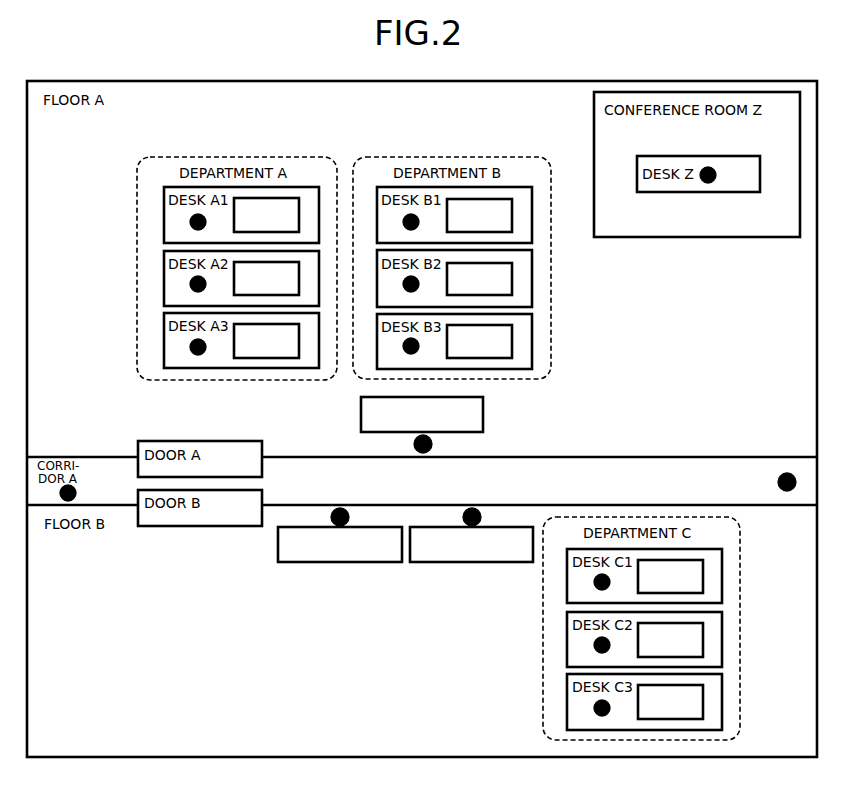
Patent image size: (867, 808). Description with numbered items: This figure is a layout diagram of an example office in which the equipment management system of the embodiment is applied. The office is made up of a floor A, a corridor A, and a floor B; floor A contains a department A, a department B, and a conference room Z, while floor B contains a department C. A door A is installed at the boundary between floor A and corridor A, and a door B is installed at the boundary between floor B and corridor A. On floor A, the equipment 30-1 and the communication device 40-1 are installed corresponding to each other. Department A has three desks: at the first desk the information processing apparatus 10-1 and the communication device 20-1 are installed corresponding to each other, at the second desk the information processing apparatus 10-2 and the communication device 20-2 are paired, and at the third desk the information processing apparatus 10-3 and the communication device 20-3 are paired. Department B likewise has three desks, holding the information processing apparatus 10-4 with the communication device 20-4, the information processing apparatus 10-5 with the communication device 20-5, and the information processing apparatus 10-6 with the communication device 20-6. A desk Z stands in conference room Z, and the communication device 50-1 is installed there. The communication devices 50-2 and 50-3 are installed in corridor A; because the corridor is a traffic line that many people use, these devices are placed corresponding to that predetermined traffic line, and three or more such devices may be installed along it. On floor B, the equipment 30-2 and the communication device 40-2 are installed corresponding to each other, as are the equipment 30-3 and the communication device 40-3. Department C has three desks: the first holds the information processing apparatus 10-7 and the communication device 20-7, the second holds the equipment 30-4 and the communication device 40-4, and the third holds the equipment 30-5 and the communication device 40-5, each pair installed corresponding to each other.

The information processing apparatus 10-1 is at (236, 232).
The information processing apparatus 10-2 is at (236, 295).
The information processing apparatus 10-3 is at (236, 358).
The information processing apparatus 10-4 is at (509, 199).
The information processing apparatus 10-5 is at (512, 280).
The information processing apparatus 10-6 is at (512, 343).
The information processing apparatus 10-7 is at (640, 593).
The communication device 20-1 is at (190, 222).
The communication device 20-2 is at (190, 284).
The communication device 20-3 is at (190, 347).
The communication device 20-4 is at (403, 222).
The communication device 20-5 is at (415, 290).
The communication device 20-6 is at (415, 352).
The communication device 20-7 is at (594, 582).
The equipment 30-1 is at (483, 415).
The equipment 30-2 is at (295, 562).
The equipment 30-3 is at (425, 562).
The equipment 30-4 is at (640, 657).
The equipment 30-5 is at (640, 719).
The communication device 40-1 is at (432, 444).
The communication device 40-2 is at (340, 507).
The communication device 40-3 is at (472, 507).
The communication device 40-4 is at (594, 645).
The communication device 40-5 is at (594, 708).
The communication device 50-1 is at (708, 183).
The communication device 50-2 is at (76, 492).
The communication device 50-3 is at (786, 473).